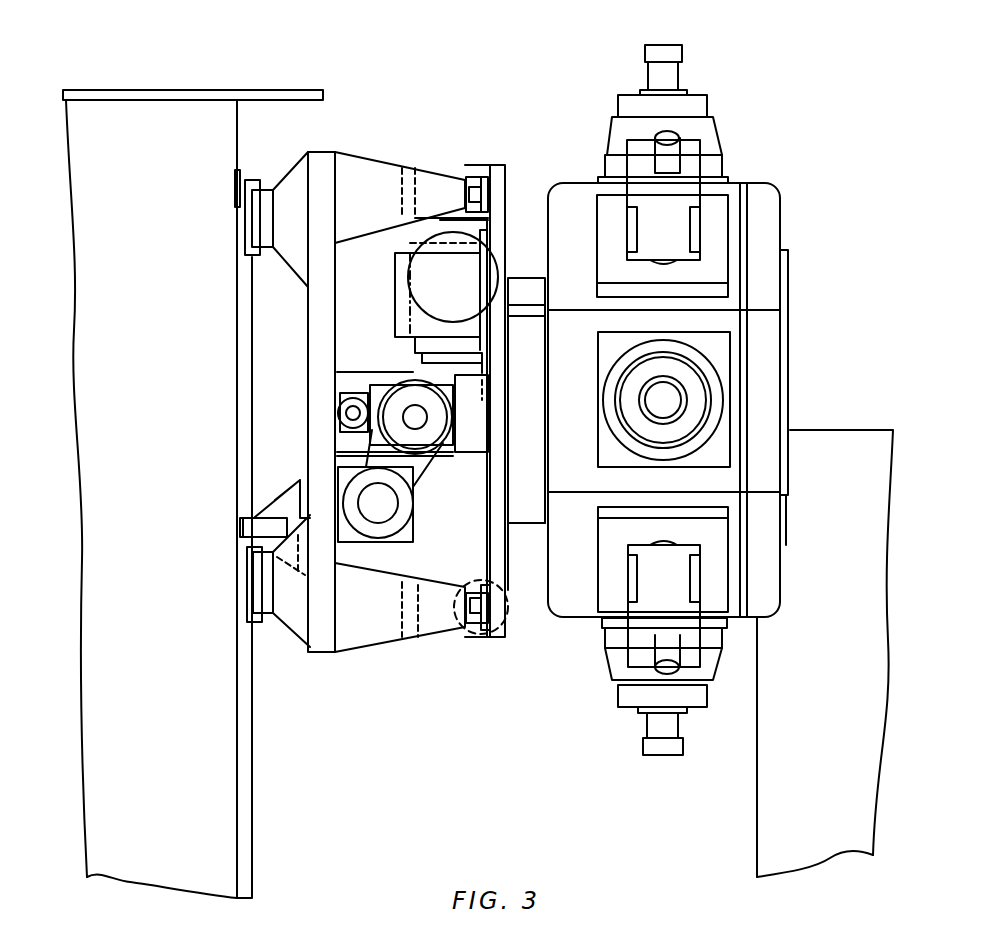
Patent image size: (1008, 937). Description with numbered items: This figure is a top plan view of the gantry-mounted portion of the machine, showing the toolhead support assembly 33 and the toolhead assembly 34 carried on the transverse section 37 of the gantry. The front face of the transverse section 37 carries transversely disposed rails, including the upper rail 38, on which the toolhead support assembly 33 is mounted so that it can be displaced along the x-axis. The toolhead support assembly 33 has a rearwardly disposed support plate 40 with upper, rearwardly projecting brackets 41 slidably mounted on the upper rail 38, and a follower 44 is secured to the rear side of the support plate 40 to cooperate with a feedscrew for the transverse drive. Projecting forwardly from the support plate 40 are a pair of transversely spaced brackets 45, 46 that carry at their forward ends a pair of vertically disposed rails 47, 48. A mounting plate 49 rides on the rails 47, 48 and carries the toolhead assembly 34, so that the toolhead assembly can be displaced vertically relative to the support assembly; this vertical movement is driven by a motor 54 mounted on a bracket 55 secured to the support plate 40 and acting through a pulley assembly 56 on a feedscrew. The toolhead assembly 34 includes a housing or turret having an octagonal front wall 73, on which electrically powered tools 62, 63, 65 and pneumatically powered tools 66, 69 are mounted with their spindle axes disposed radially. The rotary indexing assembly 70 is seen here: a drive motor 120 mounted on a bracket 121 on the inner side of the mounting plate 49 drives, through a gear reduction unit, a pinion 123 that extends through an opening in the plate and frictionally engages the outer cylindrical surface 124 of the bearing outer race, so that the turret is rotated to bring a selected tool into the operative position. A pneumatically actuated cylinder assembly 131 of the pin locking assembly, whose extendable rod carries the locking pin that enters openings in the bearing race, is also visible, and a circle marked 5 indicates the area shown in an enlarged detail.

The detail view circle 5 is at (482, 634).
The toolhead support assembly 33 is at (411, 160).
The toolhead assembly 34 is at (783, 584).
The transverse section 37 is at (110, 677).
The upper rail 38 is at (252, 833).
The support plate 40 is at (310, 420).
The upper rearwardly projecting brackets 41 is at (288, 165).
The follower 44 is at (240, 527).
The bracket 45 is at (337, 152).
The bracket 46 is at (400, 619).
The rail 47 is at (468, 188).
The rail 48 is at (467, 587).
The mounting plate 49 is at (503, 180).
The motor 54 is at (402, 503).
The bracket 55 is at (412, 533).
The pulley assembly 56 is at (367, 445).
The electrically powered tool 62 is at (720, 438).
The electrically powered tool 63 is at (607, 142).
The electrically powered tool 65 is at (612, 681).
The pneumatically powered tool 66 is at (627, 160).
The pneumatically powered tool 69 is at (630, 653).
The rotary indexing assembly 70 is at (388, 300).
The front wall 73 is at (781, 222).
The drive motor 120 is at (422, 262).
The bracket 121 is at (395, 312).
The pinion 123 is at (566, 297).
The outer cylindrical surface 124 is at (527, 368).
The pneumatically actuated cylinder assembly 131 is at (415, 350).